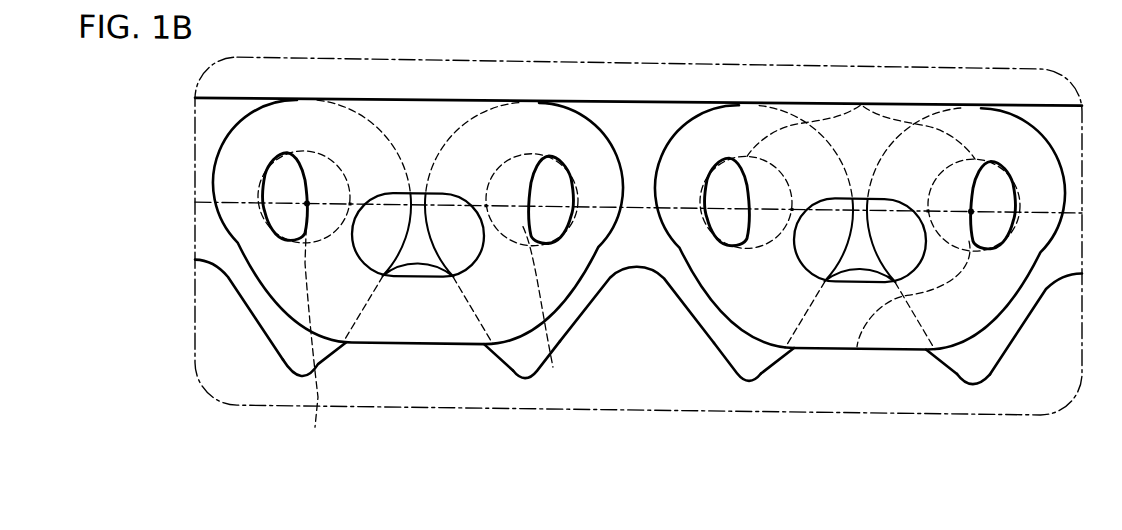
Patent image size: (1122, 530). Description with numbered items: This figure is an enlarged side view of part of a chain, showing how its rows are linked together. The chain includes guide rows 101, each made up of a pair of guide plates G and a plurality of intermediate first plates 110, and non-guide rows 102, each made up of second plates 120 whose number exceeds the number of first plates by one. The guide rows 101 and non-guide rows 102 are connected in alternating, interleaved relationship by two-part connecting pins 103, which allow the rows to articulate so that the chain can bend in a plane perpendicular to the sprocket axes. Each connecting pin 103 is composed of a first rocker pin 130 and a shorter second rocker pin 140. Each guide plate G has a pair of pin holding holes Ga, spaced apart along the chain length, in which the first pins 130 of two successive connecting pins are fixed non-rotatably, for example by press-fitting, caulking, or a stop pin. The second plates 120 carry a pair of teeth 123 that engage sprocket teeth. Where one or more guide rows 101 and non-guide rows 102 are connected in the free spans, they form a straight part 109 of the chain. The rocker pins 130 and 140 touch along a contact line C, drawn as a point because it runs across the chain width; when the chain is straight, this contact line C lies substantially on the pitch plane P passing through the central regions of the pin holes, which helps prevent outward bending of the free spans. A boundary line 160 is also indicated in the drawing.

The guide row 101 is at (655, 424).
The non-guide row 102 is at (420, 469).
The connecting pin 103 is at (210, 448).
The straight part 109 is at (1019, 87).
The first plate 110 is at (417, 250).
The second plate 120 is at (638, 268).
The teeth 123 is at (529, 360).
The first rocker pin 130 is at (285, 223).
The second rocker pin 140 is at (574, 374).
The boundary line 160 is at (866, 98).
The contact line C is at (307, 204).
The guide plate G is at (428, 327).
The pin holding hole Ga is at (300, 172).
The pitch plane P is at (239, 204).